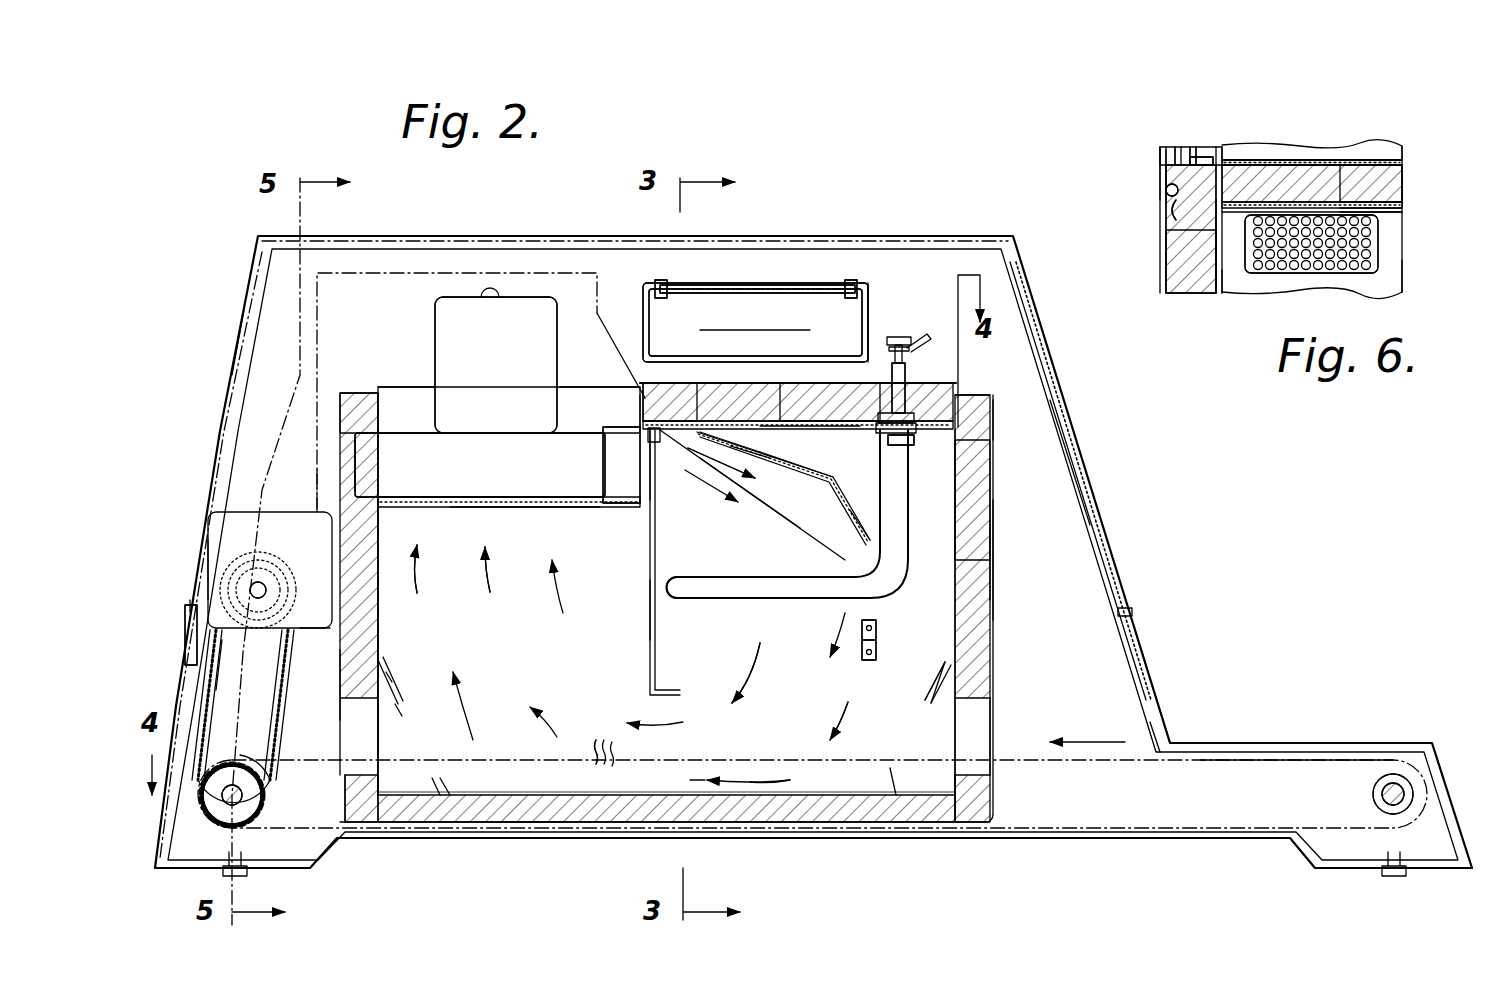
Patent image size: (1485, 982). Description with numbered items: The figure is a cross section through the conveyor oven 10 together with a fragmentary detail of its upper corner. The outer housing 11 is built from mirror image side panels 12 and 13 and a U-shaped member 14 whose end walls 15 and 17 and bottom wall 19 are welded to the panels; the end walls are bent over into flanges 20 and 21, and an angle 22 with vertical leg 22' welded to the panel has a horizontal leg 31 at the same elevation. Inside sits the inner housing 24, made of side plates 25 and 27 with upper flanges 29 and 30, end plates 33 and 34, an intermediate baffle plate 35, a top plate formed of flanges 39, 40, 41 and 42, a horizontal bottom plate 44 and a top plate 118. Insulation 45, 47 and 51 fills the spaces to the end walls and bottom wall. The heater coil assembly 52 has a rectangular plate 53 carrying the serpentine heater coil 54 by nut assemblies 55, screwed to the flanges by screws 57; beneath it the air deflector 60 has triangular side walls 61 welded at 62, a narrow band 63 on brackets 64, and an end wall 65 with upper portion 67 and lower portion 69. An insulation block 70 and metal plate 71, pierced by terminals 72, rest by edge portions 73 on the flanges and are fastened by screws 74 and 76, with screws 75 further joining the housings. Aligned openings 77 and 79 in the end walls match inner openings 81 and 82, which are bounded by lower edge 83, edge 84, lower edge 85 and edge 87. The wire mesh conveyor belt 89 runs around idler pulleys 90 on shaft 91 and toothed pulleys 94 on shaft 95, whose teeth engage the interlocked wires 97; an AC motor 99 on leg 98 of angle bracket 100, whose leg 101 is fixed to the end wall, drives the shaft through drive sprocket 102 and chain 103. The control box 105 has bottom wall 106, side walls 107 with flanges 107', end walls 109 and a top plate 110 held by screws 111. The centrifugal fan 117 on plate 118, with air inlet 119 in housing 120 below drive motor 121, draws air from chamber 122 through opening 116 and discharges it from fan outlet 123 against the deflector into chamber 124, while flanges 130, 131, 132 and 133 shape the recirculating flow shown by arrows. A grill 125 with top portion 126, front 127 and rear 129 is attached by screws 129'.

In FIG. 2, the conveyor oven 10 is at (942, 185).
In FIG. 2, the outer housing 11 is at (1152, 685).
In FIG. 6, the outer housing 11 is at (1160, 150).
In FIG. 6, the side panel 12 is at (1163, 160).
In FIG. 2, the side panel 13 is at (1154, 708).
In FIG. 2, the U-shaped member 14 is at (1000, 555).
In FIG. 2, the end wall 15 is at (995, 532).
In FIG. 2, the end wall 17 is at (340, 686).
In FIG. 2, the bottom wall 19 is at (525, 822).
In FIG. 2, the flange 20 is at (985, 395).
In FIG. 2, the flange 21 is at (356, 393).
In FIG. 6, the angle 22 is at (1158, 127).
In FIG. 6, the vertical leg 22' is at (1140, 207).
In FIG. 2, the inner housing 24 is at (980, 495).
In FIG. 6, the inner housing 24 is at (1180, 262).
In FIG. 6, the side plate 25 is at (1222, 293).
In FIG. 2, the side plate 27 is at (491, 612).
In FIG. 6, the flange 29 is at (1190, 148).
In FIG. 2, the flange 30 is at (585, 387).
In FIG. 6, the horizontal leg 31 is at (1166, 188).
In FIG. 2, the end plate 33 is at (950, 598).
In FIG. 2, the vertical end plate 34 is at (388, 620).
In FIG. 2, the intermediate baffle plate 35 is at (648, 612).
In FIG. 6, the intermediate baffle plate 35 is at (1405, 286).
In FIG. 6, the flange 39 is at (1186, 230).
In FIG. 2, the flange 40 is at (935, 442).
In FIG. 2, the flange 41 is at (721, 463).
In FIG. 2, the flange 42 is at (665, 434).
In FIG. 6, the flange 42 is at (1405, 220).
In FIG. 2, the horizontal bottom plate 44 is at (688, 782).
In FIG. 2, the insulation 45 is at (1000, 585).
In FIG. 2, the insulation 47 is at (378, 652).
In FIG. 2, the insulation 51 is at (800, 782).
In FIG. 2, the heater coil assembly 52 is at (716, 598).
In FIG. 2, the rectangular plate 53 is at (808, 432).
In FIG. 6, the rectangular plate 53 is at (1405, 205).
In FIG. 2, the serpentine heater coil 54 is at (706, 577).
In FIG. 2, the nut assemblies 55 is at (860, 432).
In FIG. 2, the screws 57 is at (640, 410).
In FIG. 2, the air deflector 60 is at (762, 528).
In FIG. 2, the triangular side walls 61 is at (782, 536).
In FIG. 2, the weld 62 is at (745, 436).
In FIG. 2, the narrow band 63 is at (878, 660).
In FIG. 2, the brackets 64 is at (878, 636).
In FIG. 2, the end wall 65 is at (790, 470).
In FIG. 2, the upper portion 67 is at (765, 461).
In FIG. 2, the lower portion 69 is at (862, 526).
In FIG. 2, the insulation block 70 is at (838, 383).
In FIG. 6, the insulation block 70 is at (1405, 178).
In FIG. 2, the metal plate 71 is at (740, 383).
In FIG. 6, the metal plate 71 is at (1340, 150).
In FIG. 2, the terminals 72 is at (906, 352).
In FIG. 6, the edge portions 73 is at (1212, 157).
In FIG. 6, the screws 74 is at (1205, 150).
In FIG. 2, the screws 75 is at (386, 387).
In FIG. 2, the screws 76 is at (945, 383).
In FIG. 2, the rectangular opening 77 is at (993, 700).
In FIG. 2, the rectangular opening 79 is at (342, 705).
In FIG. 2, the opening 81 is at (905, 732).
In FIG. 2, the opening 82 is at (420, 734).
In FIG. 2, the lower edge 83 is at (940, 672).
In FIG. 2, the edge 84 is at (958, 782).
In FIG. 2, the lower edge 85 is at (400, 706).
In FIG. 2, the edge 87 is at (432, 790).
In FIG. 2, the endless wire mesh conveyor belt 89 is at (1295, 760).
In FIG. 2, the idler pulleys 90 is at (1362, 778).
In FIG. 2, the shaft 91 is at (1383, 796).
In FIG. 2, the pulleys 94 is at (262, 792).
In FIG. 2, the shaft 95 is at (235, 768).
In FIG. 2, the interlocked wires 97 is at (600, 745).
In FIG. 2, the leg 98 is at (300, 530).
In FIG. 2, the AC motor 99 is at (312, 492).
In FIG. 2, the angle bracket 100 is at (318, 630).
In FIG. 2, the leg 101 is at (282, 572).
In FIG. 2, the drive sprocket 102 is at (238, 645).
In FIG. 2, the chain 103 is at (188, 668).
In FIG. 2, the rectangular box 105 is at (872, 290).
In FIG. 2, the bottom wall 106 is at (660, 383).
In FIG. 2, the side walls 107 is at (769, 322).
In FIG. 2, the flanges 107' is at (755, 322).
In FIG. 2, the end walls 109 is at (755, 312).
In FIG. 2, the top plate 110 is at (712, 285).
In FIG. 2, the screws 111 is at (655, 282).
In FIG. 2, the opening 116 is at (420, 486).
In FIG. 2, the centrifugal fan 117 is at (480, 465).
In FIG. 2, the top plate 118 is at (602, 506).
In FIG. 2, the air inlet 119 is at (500, 506).
In FIG. 2, the fan housing 120 is at (445, 504).
In FIG. 2, the drive motor 121 is at (496, 365).
In FIG. 2, the chamber 122 is at (536, 620).
In FIG. 2, the fan outlet 123 is at (660, 482).
In FIG. 6, the fan outlet 123 is at (1380, 246).
In FIG. 2, the chamber 124 is at (817, 620).
In FIG. 2, the grill 125 is at (258, 236).
In FIG. 2, the top portion 126 is at (523, 236).
In FIG. 2, the front 127 is at (1082, 445).
In FIG. 2, the rear 129 is at (203, 343).
In FIG. 2, the screws 129' is at (682, 583).
In FIG. 2, the flange 130 is at (936, 700).
In FIG. 2, the flange 131 is at (395, 676).
In FIG. 2, the flange 132 is at (890, 774).
In FIG. 2, the flange 133 is at (442, 782).